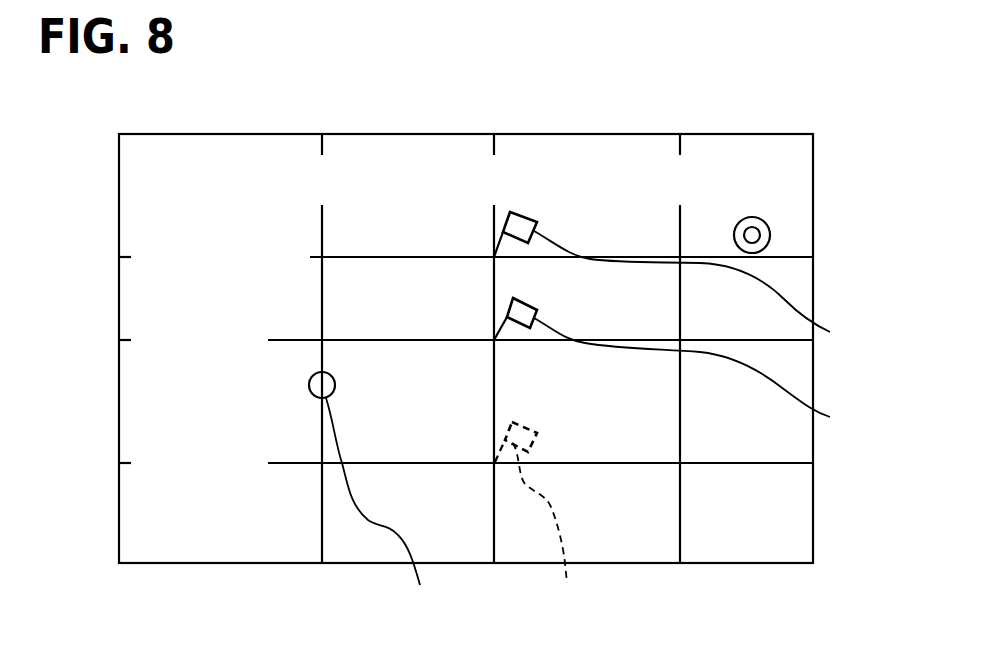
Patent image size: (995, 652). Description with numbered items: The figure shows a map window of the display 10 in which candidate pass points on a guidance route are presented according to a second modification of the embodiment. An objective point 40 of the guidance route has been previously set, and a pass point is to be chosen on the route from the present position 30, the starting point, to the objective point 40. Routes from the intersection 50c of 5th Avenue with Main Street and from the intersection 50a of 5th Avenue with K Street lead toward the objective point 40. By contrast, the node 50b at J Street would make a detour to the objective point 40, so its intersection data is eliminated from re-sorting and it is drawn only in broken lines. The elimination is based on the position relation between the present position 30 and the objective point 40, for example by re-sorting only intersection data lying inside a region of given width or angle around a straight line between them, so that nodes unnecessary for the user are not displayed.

The display 10 is at (740, 132).
The objective point 40 is at (771, 232).
The intersection 50c is at (683, 283).
The intersection 50a is at (682, 370).
The node 50b is at (542, 520).
The present position 30 is at (376, 495).